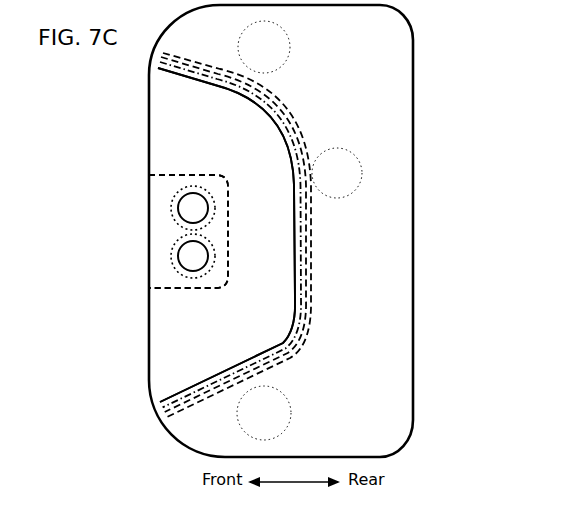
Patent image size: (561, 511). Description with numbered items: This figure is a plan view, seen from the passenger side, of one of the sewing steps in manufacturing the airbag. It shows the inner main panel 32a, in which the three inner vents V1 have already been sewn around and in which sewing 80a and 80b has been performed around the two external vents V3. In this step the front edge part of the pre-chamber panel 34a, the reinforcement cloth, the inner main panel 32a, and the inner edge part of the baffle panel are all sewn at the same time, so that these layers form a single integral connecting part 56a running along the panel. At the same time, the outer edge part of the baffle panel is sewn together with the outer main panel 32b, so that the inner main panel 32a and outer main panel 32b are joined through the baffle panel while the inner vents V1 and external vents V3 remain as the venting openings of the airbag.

The pre-chamber panel 34a is at (405, 417).
The inner main panel 32a is at (152, 383).
The outer main panel 32b is at (205, 90).
The integral connecting part 56a is at (312, 310).
The sewing around external vent 80a is at (178, 275).
The sewing around external vent 80b is at (182, 176).
The external vent V3 is at (185, 210).
The inner vent V1 is at (288, 42).